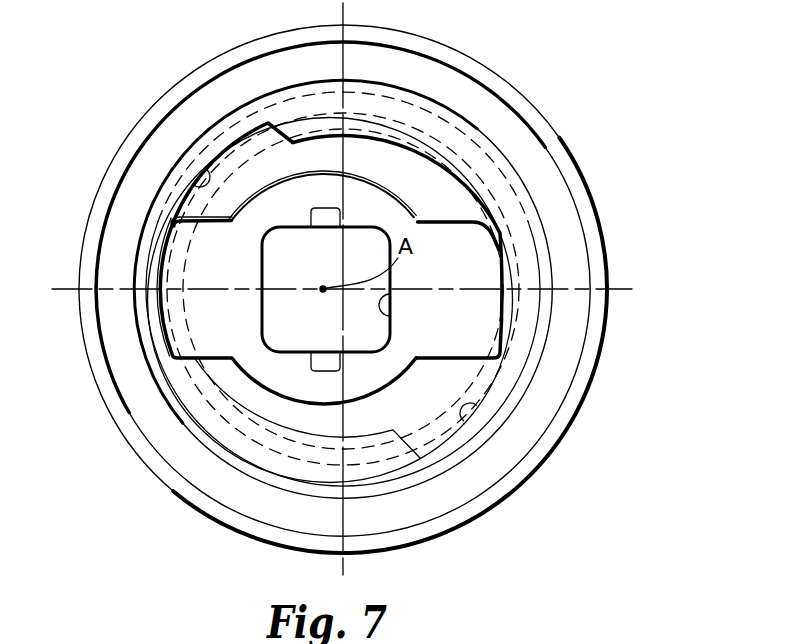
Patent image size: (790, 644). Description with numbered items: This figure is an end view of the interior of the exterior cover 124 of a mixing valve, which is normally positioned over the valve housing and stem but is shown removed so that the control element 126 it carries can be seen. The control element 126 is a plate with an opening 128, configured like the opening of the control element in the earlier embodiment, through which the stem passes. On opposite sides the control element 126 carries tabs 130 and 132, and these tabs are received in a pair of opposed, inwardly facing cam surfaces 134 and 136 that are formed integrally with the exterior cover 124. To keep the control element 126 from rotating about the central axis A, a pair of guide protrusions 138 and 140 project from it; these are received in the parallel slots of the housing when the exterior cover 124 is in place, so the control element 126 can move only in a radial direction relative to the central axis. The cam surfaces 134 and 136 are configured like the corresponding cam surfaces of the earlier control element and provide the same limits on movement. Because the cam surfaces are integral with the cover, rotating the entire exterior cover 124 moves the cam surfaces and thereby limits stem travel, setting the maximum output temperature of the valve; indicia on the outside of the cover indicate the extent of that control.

The exterior cover 124 is at (525, 97).
The control element 126 is at (372, 180).
The opening 128 is at (389, 313).
The tab 130 is at (473, 276).
The tab 132 is at (185, 277).
The cam surface 134 is at (477, 410).
The cam surface 136 is at (206, 169).
The guide protrusion 138 is at (326, 208).
The guide protrusion 140 is at (333, 372).